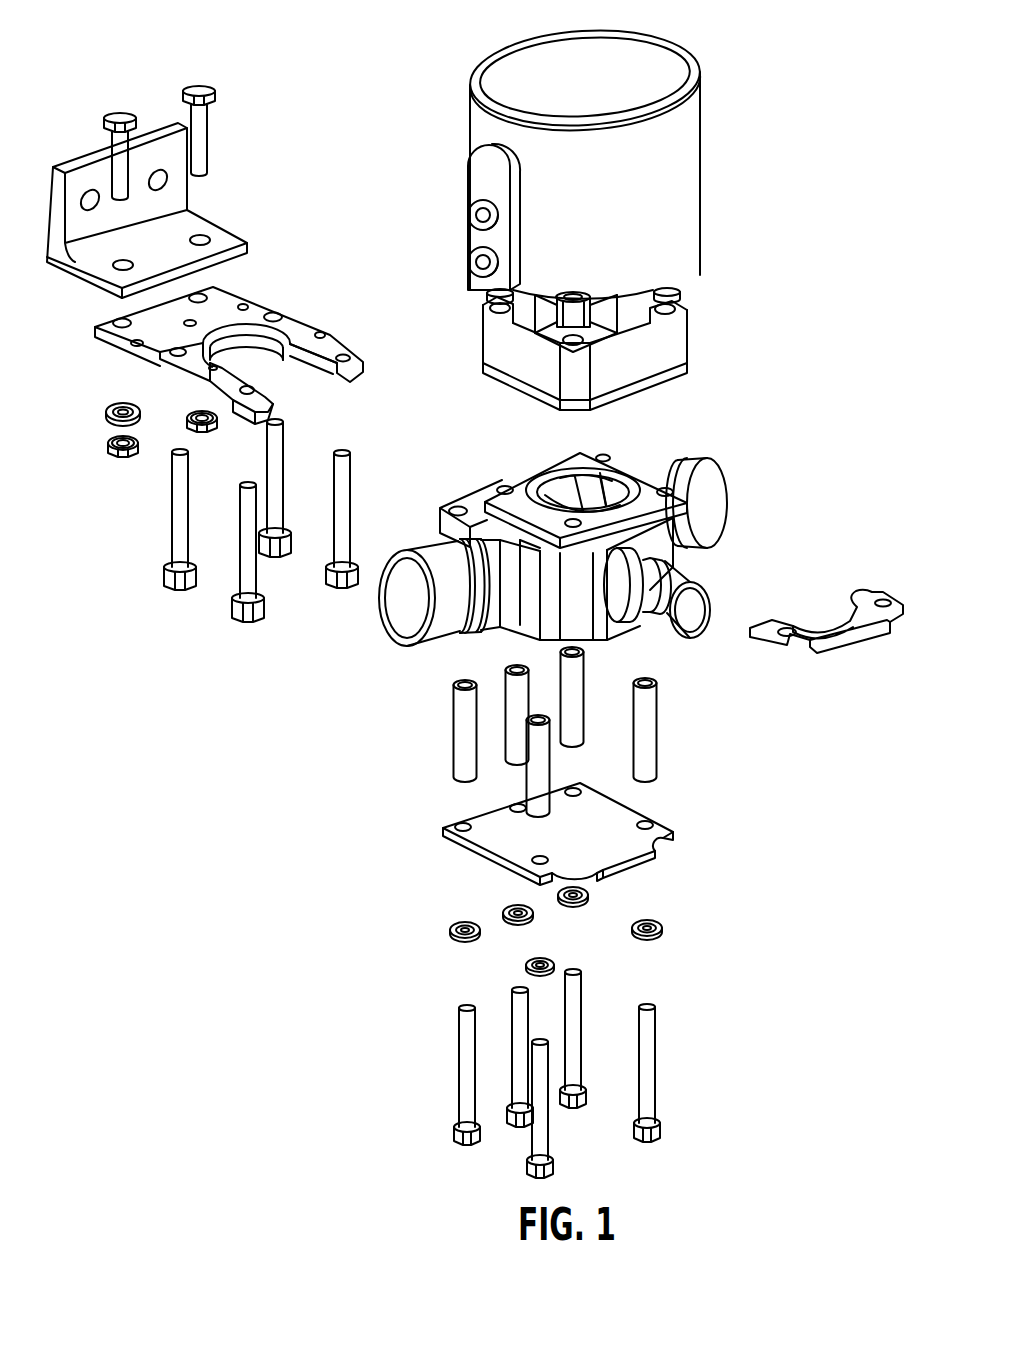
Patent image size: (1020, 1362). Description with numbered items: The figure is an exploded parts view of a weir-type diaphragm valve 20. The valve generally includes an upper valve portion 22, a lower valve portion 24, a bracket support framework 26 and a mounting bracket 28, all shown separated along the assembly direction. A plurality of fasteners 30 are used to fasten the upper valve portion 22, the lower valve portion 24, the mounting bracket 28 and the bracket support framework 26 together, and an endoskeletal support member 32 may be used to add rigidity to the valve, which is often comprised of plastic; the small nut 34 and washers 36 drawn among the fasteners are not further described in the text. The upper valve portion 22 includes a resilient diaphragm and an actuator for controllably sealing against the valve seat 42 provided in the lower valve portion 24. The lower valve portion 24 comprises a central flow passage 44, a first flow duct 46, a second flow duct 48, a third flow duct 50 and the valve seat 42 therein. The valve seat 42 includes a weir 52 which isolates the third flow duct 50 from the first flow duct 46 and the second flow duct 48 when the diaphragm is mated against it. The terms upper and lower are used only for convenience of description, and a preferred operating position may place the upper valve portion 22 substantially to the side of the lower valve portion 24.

The weir-type diaphragm valve 20 is at (745, 247).
The upper valve portion 22 is at (688, 342).
The lower valve portion 24 is at (680, 540).
The bracket support framework 26 is at (303, 328).
The mounting bracket 28 is at (227, 240).
The fasteners 30 is at (348, 478).
The endoskeletal support member 32 is at (202, 127).
The nut 34 is at (118, 460).
The washer 36 is at (125, 402).
The valve seat 42 is at (622, 472).
The central flow passage 44 is at (413, 597).
The first flow duct 46 is at (417, 618).
The second flow duct 48 is at (715, 492).
The third flow duct 50 is at (694, 610).
The weir 52 is at (612, 486).